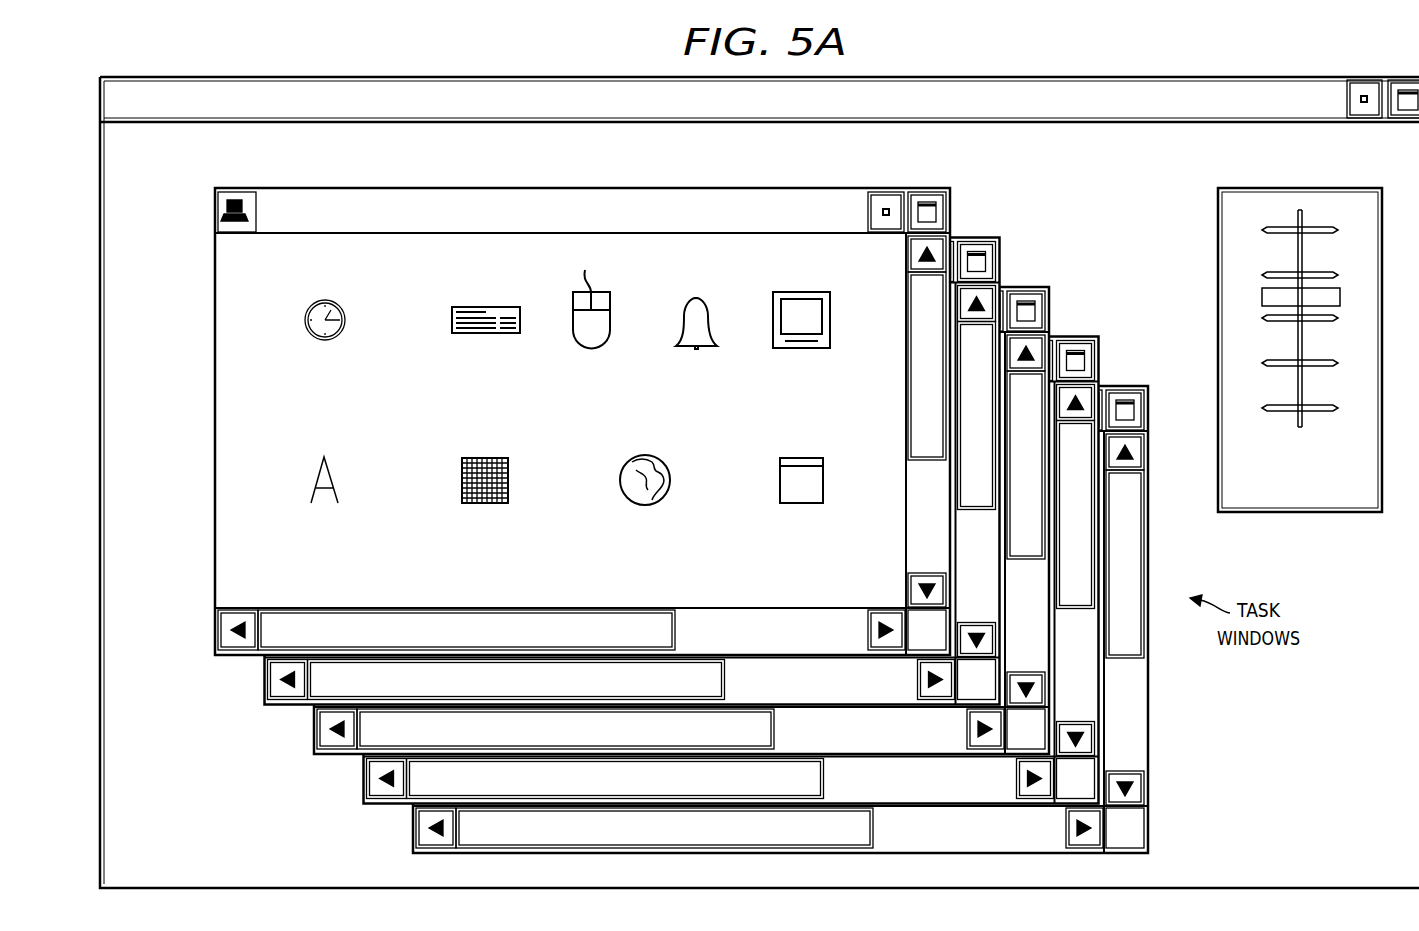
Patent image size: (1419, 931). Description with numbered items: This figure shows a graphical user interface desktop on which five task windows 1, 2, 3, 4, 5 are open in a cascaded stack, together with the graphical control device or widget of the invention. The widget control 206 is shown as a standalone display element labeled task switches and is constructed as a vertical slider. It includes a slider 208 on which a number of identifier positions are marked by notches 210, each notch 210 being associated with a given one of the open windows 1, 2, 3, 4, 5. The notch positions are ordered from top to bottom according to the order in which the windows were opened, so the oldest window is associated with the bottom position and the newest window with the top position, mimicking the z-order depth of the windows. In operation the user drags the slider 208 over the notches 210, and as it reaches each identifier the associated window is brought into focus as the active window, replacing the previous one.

The window 1 is at (951, 216).
The window 2 is at (1001, 265).
The window 3 is at (1051, 315).
The window 4 is at (1101, 364).
The window 5 is at (1151, 414).
The widget control 206 is at (1271, 358).
The slider 208 is at (1262, 297).
The notches 210 is at (1281, 226).